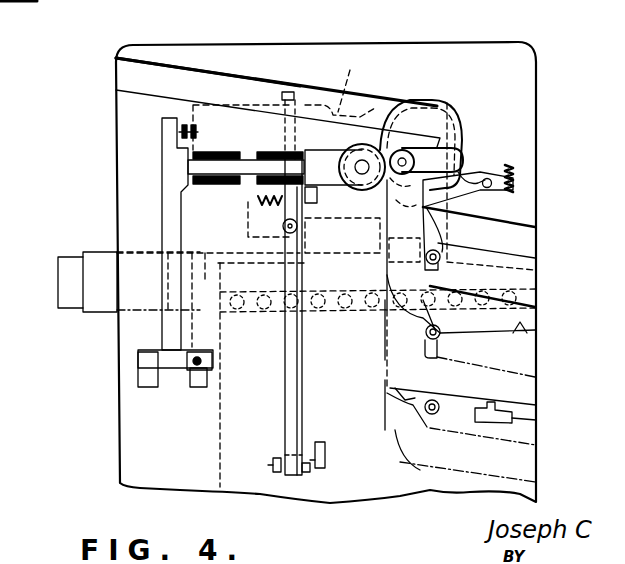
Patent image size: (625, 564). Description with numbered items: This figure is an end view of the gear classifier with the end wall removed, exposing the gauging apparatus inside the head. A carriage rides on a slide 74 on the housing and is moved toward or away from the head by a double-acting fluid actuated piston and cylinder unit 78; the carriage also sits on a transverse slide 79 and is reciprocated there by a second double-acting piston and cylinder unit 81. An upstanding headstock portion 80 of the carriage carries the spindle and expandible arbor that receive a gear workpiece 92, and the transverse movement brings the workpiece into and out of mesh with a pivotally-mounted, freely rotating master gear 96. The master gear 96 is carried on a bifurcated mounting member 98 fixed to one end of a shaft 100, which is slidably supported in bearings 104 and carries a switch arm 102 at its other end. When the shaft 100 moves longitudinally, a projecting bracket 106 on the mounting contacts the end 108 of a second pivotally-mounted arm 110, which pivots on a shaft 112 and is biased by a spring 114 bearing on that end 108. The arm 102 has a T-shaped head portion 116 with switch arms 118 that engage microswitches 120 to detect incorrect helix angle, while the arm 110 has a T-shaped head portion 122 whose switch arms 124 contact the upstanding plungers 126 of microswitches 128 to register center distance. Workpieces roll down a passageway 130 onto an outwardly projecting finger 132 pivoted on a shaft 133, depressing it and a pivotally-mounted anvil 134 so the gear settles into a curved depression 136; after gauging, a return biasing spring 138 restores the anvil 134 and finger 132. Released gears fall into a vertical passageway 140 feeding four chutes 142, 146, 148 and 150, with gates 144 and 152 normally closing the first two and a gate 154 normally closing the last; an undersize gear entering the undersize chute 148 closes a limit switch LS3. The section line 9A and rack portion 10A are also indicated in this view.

The section line 9A is at (334, 83).
The rack teeth 10A is at (214, 150).
The slide 74 is at (290, 252).
The double-acting fluid actuated piston and cylinder unit 78 is at (358, 270).
The transverse slide 79 is at (545, 274).
The upstanding headstock portion 80 is at (430, 108).
The double-acting piston and cylinder unit 81 is at (94, 312).
The gear workpiece 92 is at (452, 118).
The master gear 96 is at (400, 133).
The bifurcated mounting member 98 is at (338, 150).
The shaft 100 is at (239, 158).
The switch arm 102 is at (161, 180).
The bearings 104 is at (188, 131).
The projecting bracket 106 is at (318, 196).
The end of arm 108 is at (333, 167).
The second pivotally-mounted arm 110 is at (292, 366).
The shaft 112 is at (282, 226).
The spring 114 is at (258, 201).
The T-shaped head portion 116 is at (173, 370).
The switch arms 118 is at (212, 358).
The microswitches 120 is at (145, 378).
The T-shaped head portion 122 is at (288, 458).
The switch arms 124 is at (272, 464).
The upstanding plungers 126 is at (308, 470).
The microswitches 128 is at (328, 461).
The passageway 130 is at (207, 72).
The outwardly projecting finger 132 is at (466, 145).
The shaft 133 is at (418, 182).
The pivotally-mounted anvil 134 is at (492, 170).
The curved depression 136 is at (470, 168).
The return biasing spring 138 is at (514, 170).
The vertical passageway 140 is at (386, 231).
The chute 142 is at (530, 236).
The gate 144 is at (470, 246).
The chute 146 is at (535, 332).
The undersize chute 148 is at (548, 394).
The chute 150 is at (545, 468).
The gate 152 is at (387, 331).
The gate 154 is at (387, 407).
The limit switch LS3 is at (545, 421).